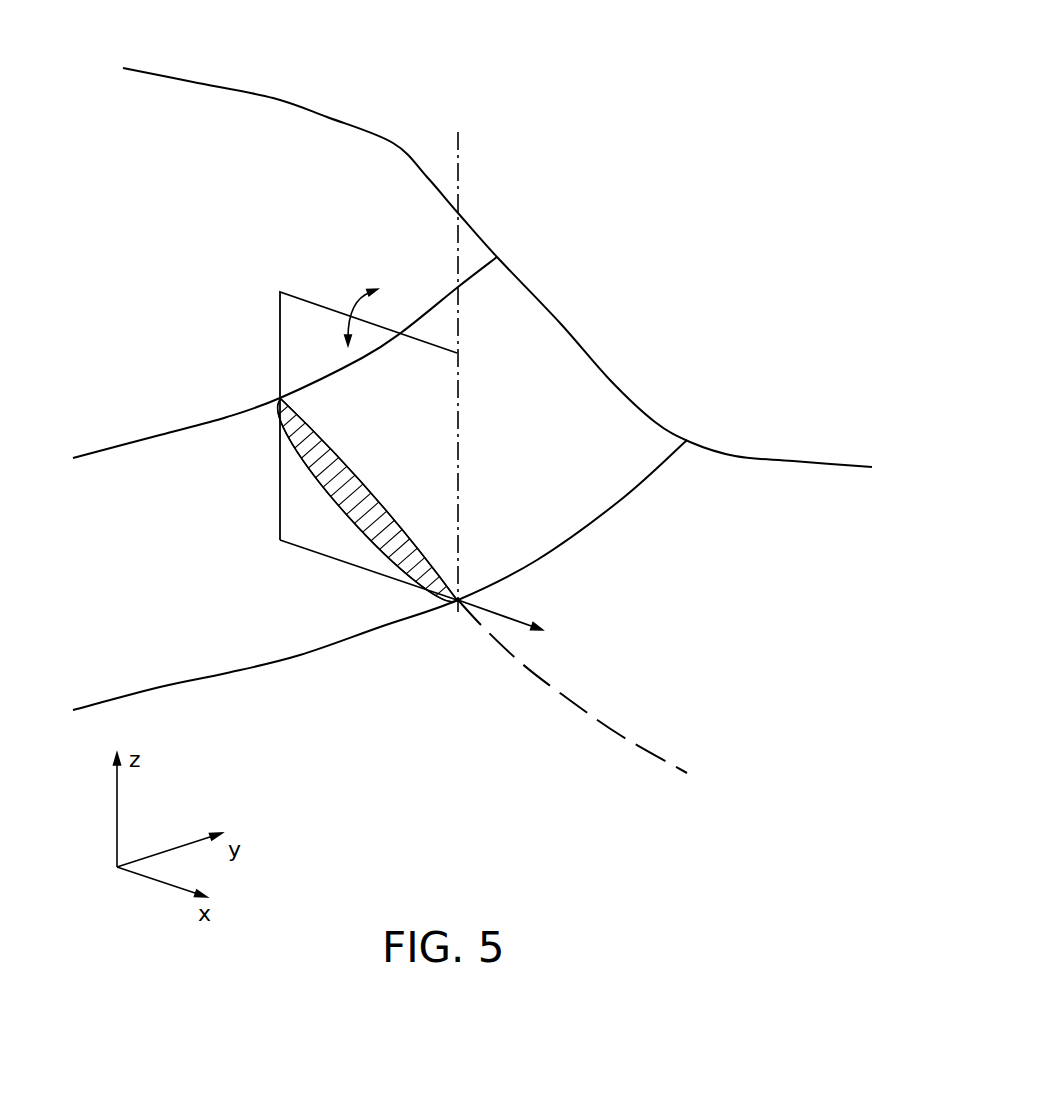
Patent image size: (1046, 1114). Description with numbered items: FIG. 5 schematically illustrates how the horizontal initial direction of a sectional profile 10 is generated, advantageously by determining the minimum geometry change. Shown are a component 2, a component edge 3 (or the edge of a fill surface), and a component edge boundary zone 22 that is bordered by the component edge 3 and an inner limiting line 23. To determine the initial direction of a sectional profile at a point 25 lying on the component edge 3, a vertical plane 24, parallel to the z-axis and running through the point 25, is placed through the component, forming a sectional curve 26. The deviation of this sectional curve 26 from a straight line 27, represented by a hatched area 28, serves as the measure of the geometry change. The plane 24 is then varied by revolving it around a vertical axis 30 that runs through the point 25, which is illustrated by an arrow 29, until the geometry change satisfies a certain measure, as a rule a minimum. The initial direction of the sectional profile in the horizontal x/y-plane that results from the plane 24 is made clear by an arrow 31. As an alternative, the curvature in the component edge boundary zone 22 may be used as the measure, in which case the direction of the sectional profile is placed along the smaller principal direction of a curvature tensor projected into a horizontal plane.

The component 2 is at (394, 103).
The component edge 3 is at (650, 477).
The sectional profile 10 is at (587, 707).
The component edge boundary zone 22 is at (550, 363).
The inner limiting line 23 is at (480, 268).
The vertical plane 24 is at (298, 343).
The point 25 is at (458, 603).
The sectional curve 26 is at (310, 463).
The straight line 27 is at (318, 428).
The hatched area 28 is at (353, 508).
The arrow 29 is at (355, 312).
The vertical axis 30 is at (460, 152).
The arrow 31 is at (502, 613).